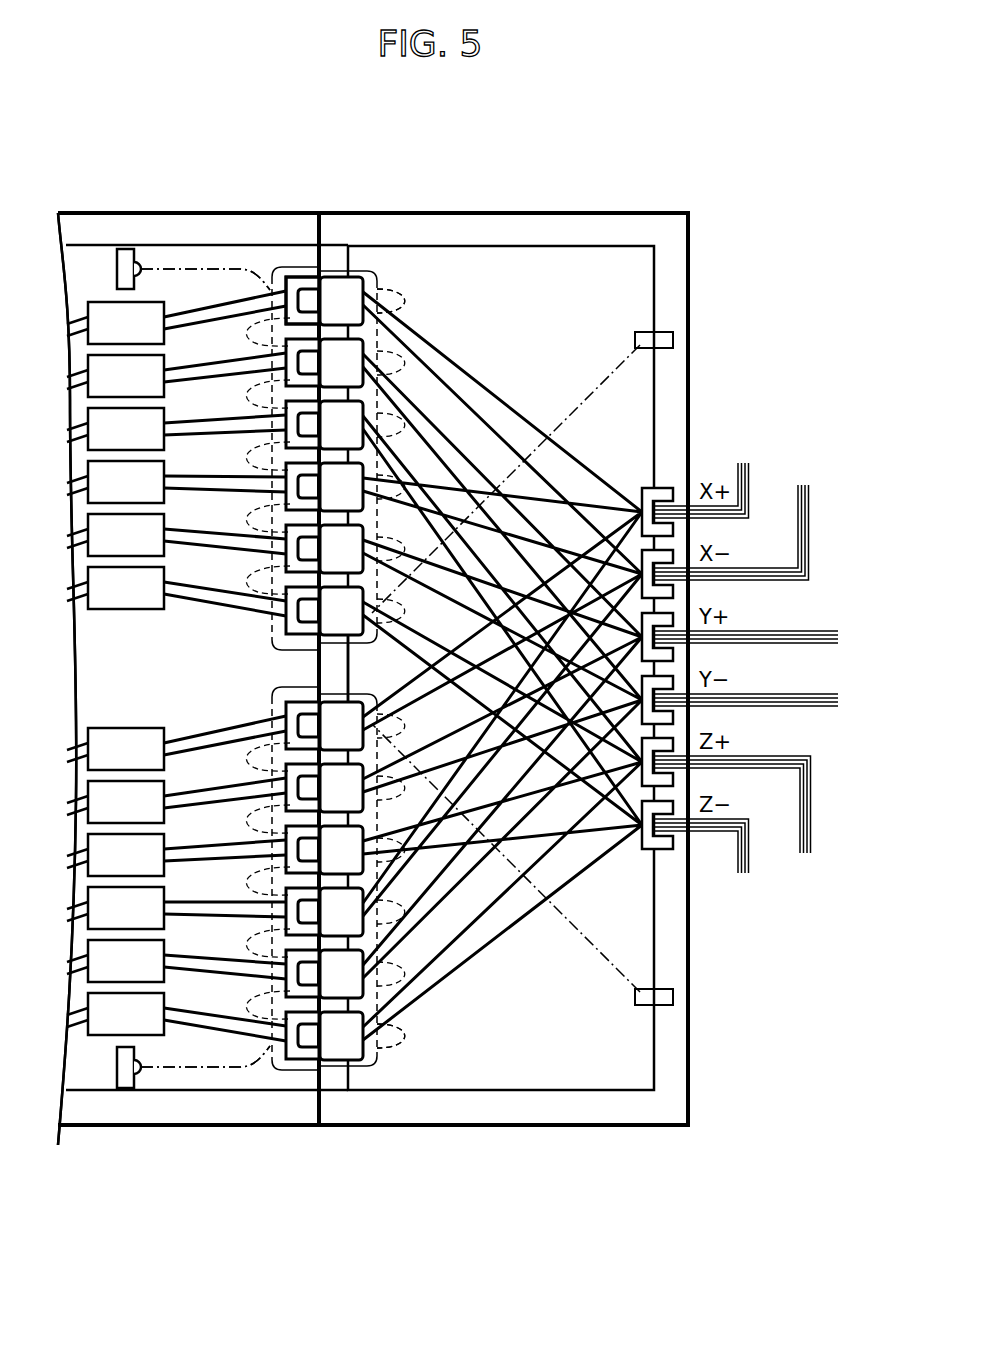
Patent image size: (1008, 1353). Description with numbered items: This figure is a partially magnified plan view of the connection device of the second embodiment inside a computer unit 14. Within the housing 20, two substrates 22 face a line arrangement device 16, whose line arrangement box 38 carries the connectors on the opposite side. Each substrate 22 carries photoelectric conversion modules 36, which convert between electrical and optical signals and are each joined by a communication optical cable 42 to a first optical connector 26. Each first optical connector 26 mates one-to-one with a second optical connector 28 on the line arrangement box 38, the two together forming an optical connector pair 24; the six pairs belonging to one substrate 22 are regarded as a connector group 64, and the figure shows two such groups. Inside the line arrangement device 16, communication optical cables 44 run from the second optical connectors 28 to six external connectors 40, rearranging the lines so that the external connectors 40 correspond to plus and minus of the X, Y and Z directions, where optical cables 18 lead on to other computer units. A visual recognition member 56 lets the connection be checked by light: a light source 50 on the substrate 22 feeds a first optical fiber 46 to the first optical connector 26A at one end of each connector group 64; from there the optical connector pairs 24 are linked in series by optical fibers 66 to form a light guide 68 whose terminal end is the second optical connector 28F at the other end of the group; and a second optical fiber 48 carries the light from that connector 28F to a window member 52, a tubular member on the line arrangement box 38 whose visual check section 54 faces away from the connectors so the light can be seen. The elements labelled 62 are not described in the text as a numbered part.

The computer unit 14 is at (90, 1142).
The line arrangement device 16 is at (495, 1128).
The optical cable 18 is at (798, 510).
The housing 20 is at (152, 1130).
The substrate 22 is at (90, 240).
The optical connector pair 24 is at (372, 130).
The first optical connector 26 is at (302, 276).
The first optical connector at one end 26A is at (302, 300).
The second optical connector 28 is at (340, 276).
The second optical connector at the other end 28F is at (347, 668).
The photoelectric conversion module 36 is at (110, 302).
The line arrangement box 38 is at (567, 1096).
The external connector 40 is at (668, 488).
The communication optical cable 42 is at (220, 310).
The communication optical cable 44 is at (598, 472).
The first optical fiber 46 is at (205, 268).
The second optical fiber 48 is at (590, 372).
The light source 50 is at (124, 249).
The window member 52 is at (674, 340).
The visual check section 54 is at (673, 344).
The visual recognition member 56 is at (645, 298).
The wiring region 62 is at (418, 154).
The connector group 64 is at (378, 272).
The optical fiber 66 is at (415, 330).
The light guide 68 is at (408, 286).